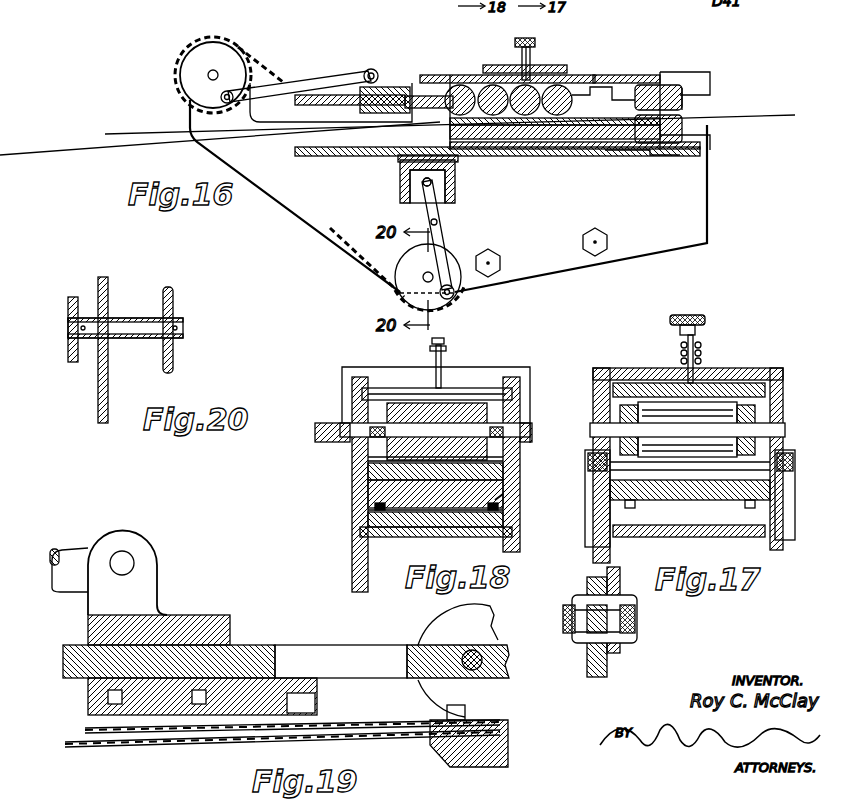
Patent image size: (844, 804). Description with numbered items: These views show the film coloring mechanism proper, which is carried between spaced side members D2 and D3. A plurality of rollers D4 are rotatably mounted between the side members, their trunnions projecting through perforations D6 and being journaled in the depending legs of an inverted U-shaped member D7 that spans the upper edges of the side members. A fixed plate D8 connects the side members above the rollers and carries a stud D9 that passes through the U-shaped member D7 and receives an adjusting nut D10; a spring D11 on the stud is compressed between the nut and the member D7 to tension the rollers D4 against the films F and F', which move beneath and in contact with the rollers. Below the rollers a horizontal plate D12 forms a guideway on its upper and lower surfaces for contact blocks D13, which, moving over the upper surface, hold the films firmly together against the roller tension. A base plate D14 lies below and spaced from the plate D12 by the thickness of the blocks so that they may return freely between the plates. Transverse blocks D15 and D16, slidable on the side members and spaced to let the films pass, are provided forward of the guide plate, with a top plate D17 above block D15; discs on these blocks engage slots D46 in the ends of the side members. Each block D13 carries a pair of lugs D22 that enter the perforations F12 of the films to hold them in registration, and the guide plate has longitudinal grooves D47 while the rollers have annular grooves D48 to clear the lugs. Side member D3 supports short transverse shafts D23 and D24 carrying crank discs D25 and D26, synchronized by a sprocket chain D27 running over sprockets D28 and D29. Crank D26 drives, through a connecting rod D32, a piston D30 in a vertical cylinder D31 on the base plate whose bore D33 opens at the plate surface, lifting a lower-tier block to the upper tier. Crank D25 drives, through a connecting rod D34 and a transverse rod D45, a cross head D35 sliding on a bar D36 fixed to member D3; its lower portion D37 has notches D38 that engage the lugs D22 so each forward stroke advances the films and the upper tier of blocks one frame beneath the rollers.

In FIG. 18, the side member D2 is at (503, 548).
In FIG. 17, the side member D2 is at (783, 535).
In FIG. 16, the side member D3 is at (448, 196).
In FIG. 20, the side member D3 is at (108, 288).
In FIG. 18, the side member D3 is at (375, 507).
In FIG. 17, the side member D3 is at (612, 580).
In FIG. 16, the roller D4 is at (462, 90).
In FIG. 18, the roller D4 is at (475, 425).
In FIG. 17, the roller D4 is at (720, 400).
In FIG. 19, the roller D4 is at (445, 620).
In FIG. 17, the perforation D6 is at (600, 420).
In FIG. 16, the inverted U-shaped member D7 is at (494, 64).
In FIG. 18, the inverted U-shaped member D7 is at (400, 375).
In FIG. 17, the inverted U-shaped member D7 is at (640, 369).
In FIG. 16, the fixed plate D8 is at (530, 88).
In FIG. 18, the fixed plate D8 is at (380, 392).
In FIG. 17, the fixed plate D8 is at (705, 390).
In FIG. 16, the stud D9 is at (527, 38).
In FIG. 18, the stud D9 is at (443, 343).
In FIG. 17, the stud D9 is at (694, 345).
In FIG. 16, the adjusting nut D10 is at (536, 42).
In FIG. 17, the adjusting nut D10 is at (698, 315).
In FIG. 18, the spring D11 is at (446, 352).
In FIG. 17, the spring D11 is at (680, 350).
In FIG. 16, the horizontal plate D12 is at (460, 138).
In FIG. 18, the horizontal plate D12 is at (380, 490).
In FIG. 17, the horizontal plate D12 is at (625, 500).
In FIG. 16, the contact block D13 is at (500, 130).
In FIG. 18, the contact block D13 is at (380, 472).
In FIG. 19, the contact block D13 is at (450, 765).
In FIG. 16, the base plate D14 is at (342, 157).
In FIG. 18, the base plate D14 is at (440, 538).
In FIG. 17, the base plate D14 is at (665, 535).
In FIG. 16, the transverse block D15 is at (648, 84).
In FIG. 16, the transverse block D16 is at (655, 160).
In FIG. 16, the top plate D17 is at (675, 76).
In FIG. 18, the lug D22 is at (372, 512).
In FIG. 19, the lug D22 is at (446, 712).
In FIG. 16, the transverse shaft D23 is at (208, 76).
In FIG. 16, the transverse shaft D24 is at (423, 279).
In FIG. 20, the transverse shaft D24 is at (130, 318).
In FIG. 16, the crank disc D25 is at (236, 62).
In FIG. 16, the crank disc D26 is at (445, 275).
In FIG. 20, the crank disc D26 is at (73, 296).
In FIG. 16, the sprocket chain D27 is at (275, 78).
In FIG. 16, the sprocket D28 is at (222, 24).
In FIG. 16, the sprocket D29 is at (395, 300).
In FIG. 20, the sprocket D29 is at (174, 305).
In FIG. 16, the piston D30 is at (400, 184).
In FIG. 16, the cylinder D31 is at (456, 185).
In FIG. 16, the connecting rod D32 is at (440, 222).
In FIG. 16, the bore D33 is at (425, 160).
In FIG. 16, the connecting rod D34 is at (328, 70).
In FIG. 19, the connecting rod D34 is at (78, 556).
In FIG. 16, the cross head D35 is at (388, 88).
In FIG. 19, the cross head D35 is at (180, 615).
In FIG. 16, the bar D36 is at (300, 109).
In FIG. 19, the bar D36 is at (205, 660).
In FIG. 16, the lower portion D37 is at (425, 95).
In FIG. 19, the lower portion D37 is at (235, 690).
In FIG. 19, the notch D38 is at (300, 693).
In FIG. 16, the transverse rod D45 is at (371, 68).
In FIG. 19, the transverse rod D45 is at (125, 560).
In FIG. 16, the slot D46 is at (700, 118).
In FIG. 16, the longitudinal groove D47 is at (596, 152).
In FIG. 18, the longitudinal groove D47 is at (510, 478).
In FIG. 17, the longitudinal groove D47 is at (755, 512).
In FIG. 18, the annular groove D48 is at (423, 432).
In FIG. 17, the annular groove D48 is at (750, 410).
In FIG. 16, the film F is at (450, 111).
In FIG. 18, the film F is at (412, 456).
In FIG. 17, the film F is at (690, 472).
In FIG. 19, the film F is at (292, 711).
In FIG. 16, the film F' is at (378, 144).
In FIG. 18, the film F' is at (454, 456).
In FIG. 17, the film F' is at (690, 472).
In FIG. 19, the film F' is at (282, 743).
In FIG. 19, the perforation F12 is at (140, 738).